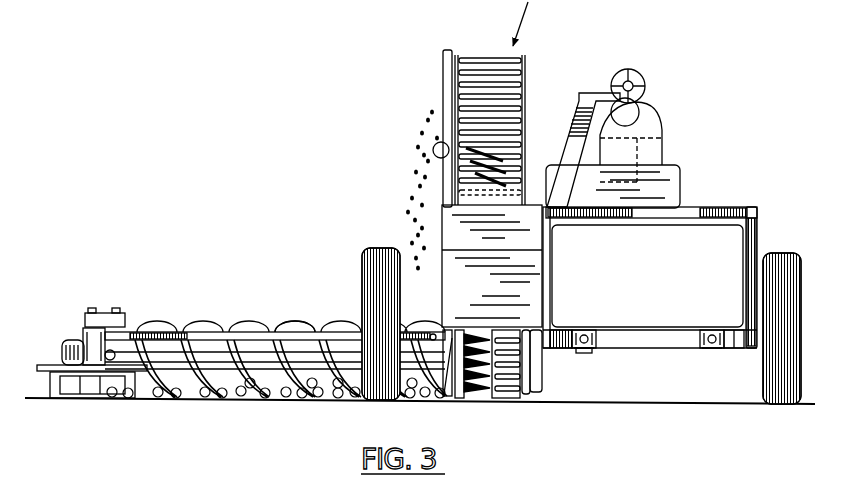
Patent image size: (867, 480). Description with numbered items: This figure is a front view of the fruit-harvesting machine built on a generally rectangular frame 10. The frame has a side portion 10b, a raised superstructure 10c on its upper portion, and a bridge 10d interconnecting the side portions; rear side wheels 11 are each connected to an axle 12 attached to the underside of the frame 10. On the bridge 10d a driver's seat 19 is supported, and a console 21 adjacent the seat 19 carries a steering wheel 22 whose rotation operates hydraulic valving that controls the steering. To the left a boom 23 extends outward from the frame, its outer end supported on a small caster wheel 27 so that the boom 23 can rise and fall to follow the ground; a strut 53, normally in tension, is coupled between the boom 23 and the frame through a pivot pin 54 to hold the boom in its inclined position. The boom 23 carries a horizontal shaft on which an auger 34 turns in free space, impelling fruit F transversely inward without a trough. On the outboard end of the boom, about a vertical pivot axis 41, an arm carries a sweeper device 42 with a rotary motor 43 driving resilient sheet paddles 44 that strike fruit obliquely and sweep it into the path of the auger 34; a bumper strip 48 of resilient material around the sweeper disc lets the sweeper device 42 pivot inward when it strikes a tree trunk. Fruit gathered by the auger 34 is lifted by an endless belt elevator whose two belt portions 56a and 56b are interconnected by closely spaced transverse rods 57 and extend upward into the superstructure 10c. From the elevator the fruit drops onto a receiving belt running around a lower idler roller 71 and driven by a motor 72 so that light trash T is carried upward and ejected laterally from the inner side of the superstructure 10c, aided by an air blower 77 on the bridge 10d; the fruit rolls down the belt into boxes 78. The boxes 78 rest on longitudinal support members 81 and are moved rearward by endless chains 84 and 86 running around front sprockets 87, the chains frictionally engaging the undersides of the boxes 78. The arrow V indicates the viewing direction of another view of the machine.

The frame 10 is at (747, 208).
The side portion 10b is at (758, 243).
The raised superstructure 10c is at (445, 88).
The bridge 10d is at (693, 207).
The rear side wheels 11 is at (372, 258).
The axle 12 is at (480, 398).
The driver's seat 19 is at (648, 128).
The console 21 is at (579, 93).
The steering wheel 22 is at (640, 78).
The boom 23 is at (198, 334).
The caster wheel 27 is at (68, 355).
The auger 34 is at (252, 345).
The vertical pivot axis 41 is at (118, 312).
The sweeper device 42 is at (124, 390).
The rotary motor 43 is at (88, 340).
The paddles 44 is at (83, 380).
The bumper strip 48 is at (35, 399).
The strut 53 is at (320, 334).
The pivot pin 54 is at (440, 334).
The endless belt portion 56a is at (456, 57).
The endless belt portion 56b is at (525, 57).
The rods 57 is at (487, 60).
The lower idler roller 71 is at (560, 208).
The motor 72 is at (433, 150).
The air blower 77 is at (633, 157).
The boxes 78 is at (657, 247).
The longitudinal support members 81 is at (592, 349).
The endless chain 84 is at (580, 345).
The endless chain 86 is at (713, 349).
The front sprockets 87 is at (583, 330).
The fodder material F is at (270, 398).
The trash T is at (404, 178).
The view direction V is at (266, 479).